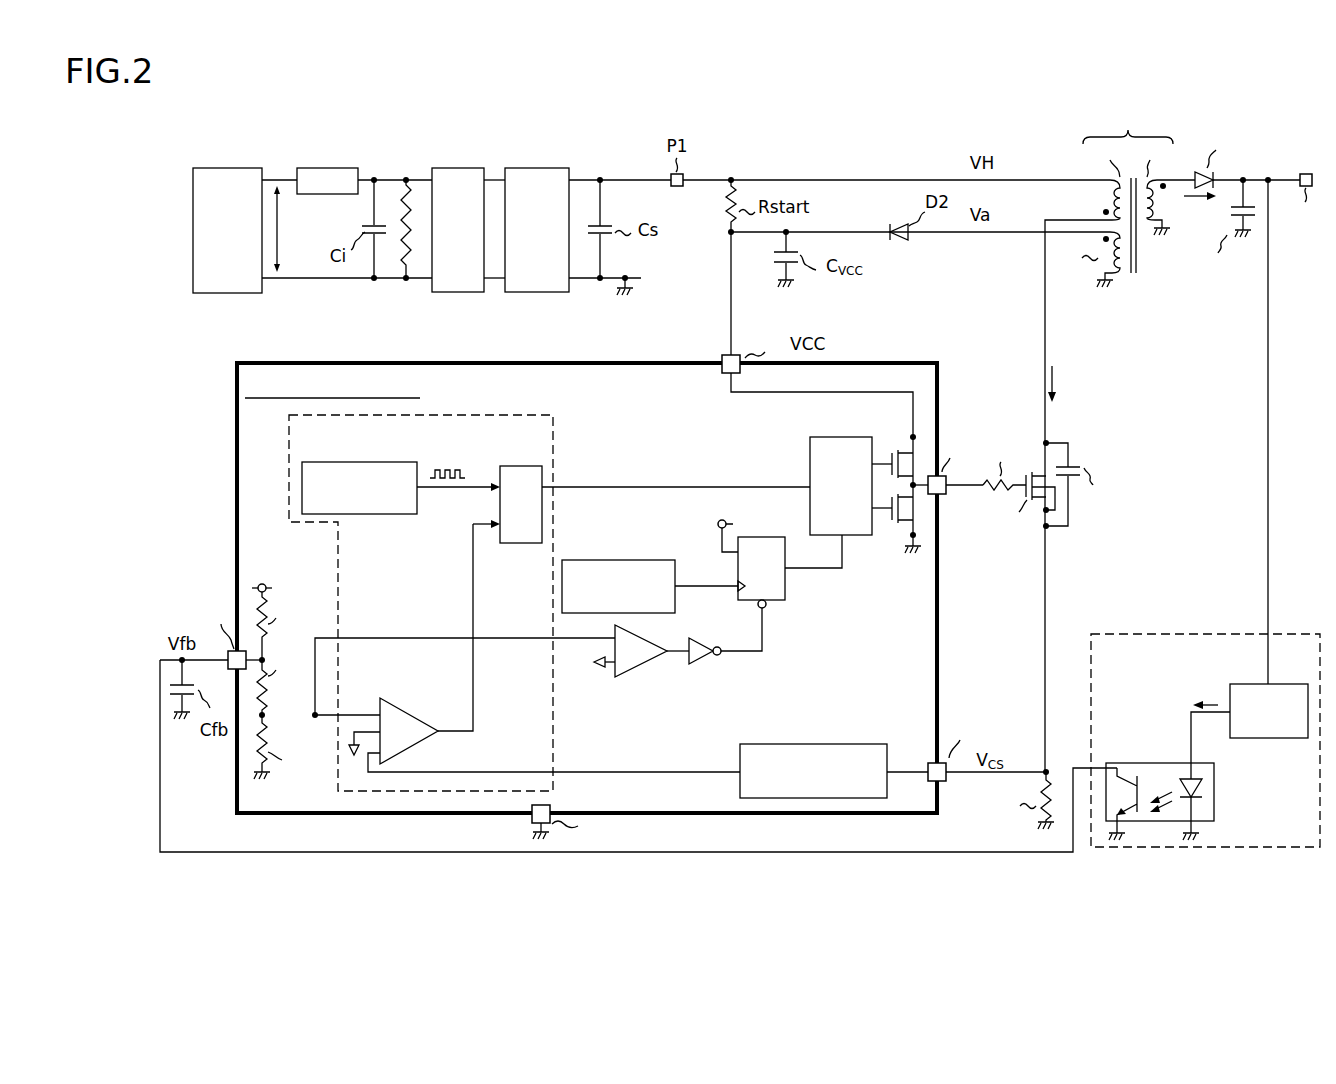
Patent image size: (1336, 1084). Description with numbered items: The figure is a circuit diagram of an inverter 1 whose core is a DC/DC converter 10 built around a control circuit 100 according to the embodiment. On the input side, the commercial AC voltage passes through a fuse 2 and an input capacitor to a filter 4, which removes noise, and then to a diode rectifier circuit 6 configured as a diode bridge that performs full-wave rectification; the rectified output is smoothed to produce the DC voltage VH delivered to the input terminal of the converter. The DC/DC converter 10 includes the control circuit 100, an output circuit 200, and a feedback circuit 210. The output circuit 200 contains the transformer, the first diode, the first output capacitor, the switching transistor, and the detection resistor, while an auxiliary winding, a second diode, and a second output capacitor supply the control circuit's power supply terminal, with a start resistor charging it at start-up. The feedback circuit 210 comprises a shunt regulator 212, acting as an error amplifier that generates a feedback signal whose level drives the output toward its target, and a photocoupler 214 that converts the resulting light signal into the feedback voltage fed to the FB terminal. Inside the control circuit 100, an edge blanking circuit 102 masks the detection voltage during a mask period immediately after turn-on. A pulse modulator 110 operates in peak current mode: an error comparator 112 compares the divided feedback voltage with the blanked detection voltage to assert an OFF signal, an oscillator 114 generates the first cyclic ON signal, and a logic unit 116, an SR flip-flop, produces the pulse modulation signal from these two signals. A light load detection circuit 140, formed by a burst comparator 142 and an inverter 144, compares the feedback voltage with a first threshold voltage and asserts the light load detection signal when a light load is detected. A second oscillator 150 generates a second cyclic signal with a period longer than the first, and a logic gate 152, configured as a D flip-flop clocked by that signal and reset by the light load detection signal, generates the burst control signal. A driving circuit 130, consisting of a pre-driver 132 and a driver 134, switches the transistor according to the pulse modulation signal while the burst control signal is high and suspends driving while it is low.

The inverter 1 is at (1330, 860).
The DC/DC converter 10 is at (478, 532).
The fuse 2 is at (336, 167).
The filter 4 is at (459, 167).
The diode rectifier circuit 6 is at (539, 167).
The control circuit 100 is at (413, 362).
The edge blanking circuit 102 is at (836, 742).
The pulse modulator 110 is at (548, 415).
The error comparator 112 is at (396, 698).
The oscillator 114 is at (333, 458).
The logic unit 116 is at (521, 463).
The driving circuit 130 is at (838, 596).
The pre-driver 132 is at (857, 536).
The driver 134 is at (928, 555).
The light load detection circuit 140 is at (615, 697).
The burst comparator 142 is at (645, 678).
The inverter 144 is at (700, 666).
The second oscillator 150 is at (595, 556).
The logic gate 152 is at (759, 533).
The output circuit 200 is at (707, 293).
The feedback circuit 210 is at (1180, 633).
The shunt regulator 212 is at (1283, 683).
The photocoupler 214 is at (1132, 762).